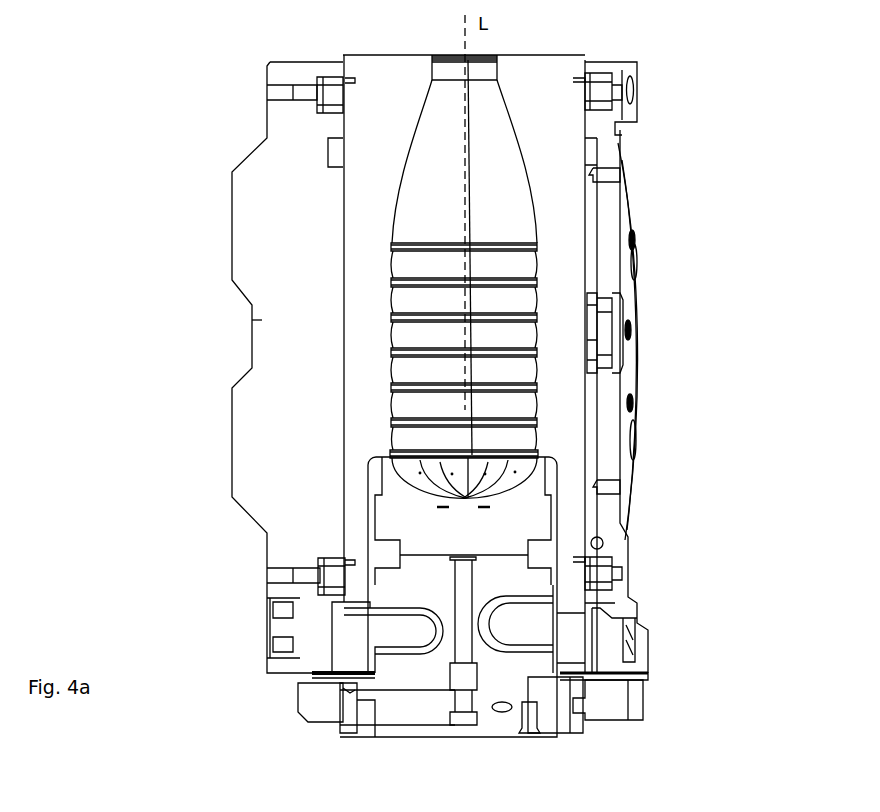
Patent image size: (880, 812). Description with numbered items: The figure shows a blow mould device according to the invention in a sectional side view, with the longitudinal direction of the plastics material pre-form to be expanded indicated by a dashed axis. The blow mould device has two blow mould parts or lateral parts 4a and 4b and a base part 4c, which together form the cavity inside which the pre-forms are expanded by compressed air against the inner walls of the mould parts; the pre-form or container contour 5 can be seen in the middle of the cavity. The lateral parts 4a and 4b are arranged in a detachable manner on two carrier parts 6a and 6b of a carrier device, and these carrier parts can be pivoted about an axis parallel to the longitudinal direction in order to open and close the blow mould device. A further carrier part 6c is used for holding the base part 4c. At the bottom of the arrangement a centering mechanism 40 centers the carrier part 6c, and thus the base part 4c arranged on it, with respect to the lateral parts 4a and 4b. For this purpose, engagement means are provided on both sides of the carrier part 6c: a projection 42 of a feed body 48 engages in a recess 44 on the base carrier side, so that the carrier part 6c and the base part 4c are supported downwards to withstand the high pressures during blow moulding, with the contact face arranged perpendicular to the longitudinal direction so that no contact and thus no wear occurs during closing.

The bellows 5 is at (497, 115).
The lateral part 4a is at (570, 162).
The lateral part 4b is at (350, 490).
The base part 4c is at (540, 518).
The carrier part 6a is at (612, 240).
The carrier part 6b is at (270, 322).
The carrier part 6c is at (540, 700).
The centering mechanism 40 is at (660, 679).
The projection 42 is at (585, 708).
The recess 44 is at (348, 725).
The feed body 48 is at (310, 712).